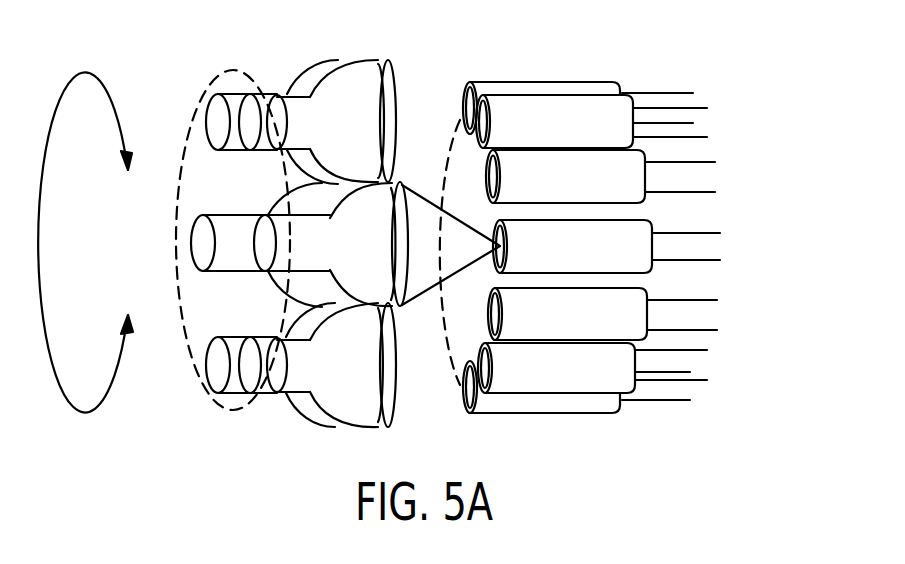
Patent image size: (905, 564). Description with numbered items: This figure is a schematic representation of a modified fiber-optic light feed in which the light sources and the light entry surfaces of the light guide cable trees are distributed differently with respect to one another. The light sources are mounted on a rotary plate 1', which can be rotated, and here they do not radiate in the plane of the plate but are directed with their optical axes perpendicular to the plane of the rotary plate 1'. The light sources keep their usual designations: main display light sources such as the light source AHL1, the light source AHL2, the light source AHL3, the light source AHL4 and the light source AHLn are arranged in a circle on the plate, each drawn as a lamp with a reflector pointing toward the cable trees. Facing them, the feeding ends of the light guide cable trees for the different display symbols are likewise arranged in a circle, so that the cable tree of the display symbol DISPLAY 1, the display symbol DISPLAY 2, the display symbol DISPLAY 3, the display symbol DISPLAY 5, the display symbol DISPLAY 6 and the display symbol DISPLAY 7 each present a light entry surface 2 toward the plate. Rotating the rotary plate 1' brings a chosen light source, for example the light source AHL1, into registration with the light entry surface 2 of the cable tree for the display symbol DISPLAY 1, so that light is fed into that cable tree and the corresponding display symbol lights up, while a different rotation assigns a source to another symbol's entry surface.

The rotary plate 1' is at (233, 214).
The light entry surfaces 2 is at (472, 104).
The light source AHLn is at (218, 120).
The light source AHL1 is at (384, 244).
The light source AHL2 is at (341, 365).
The light source AHL3 is at (217, 375).
The light source AHL4 is at (203, 240).
The display symbol DISPLAY 1 is at (606, 246).
The display symbol DISPLAY 2 is at (600, 176).
The display symbol DISPLAY 3 is at (591, 121).
The display symbol DISPLAY 5 is at (602, 314).
The display symbol DISPLAY 6 is at (592, 368).
The display symbol DISPLAY 7 is at (567, 403).